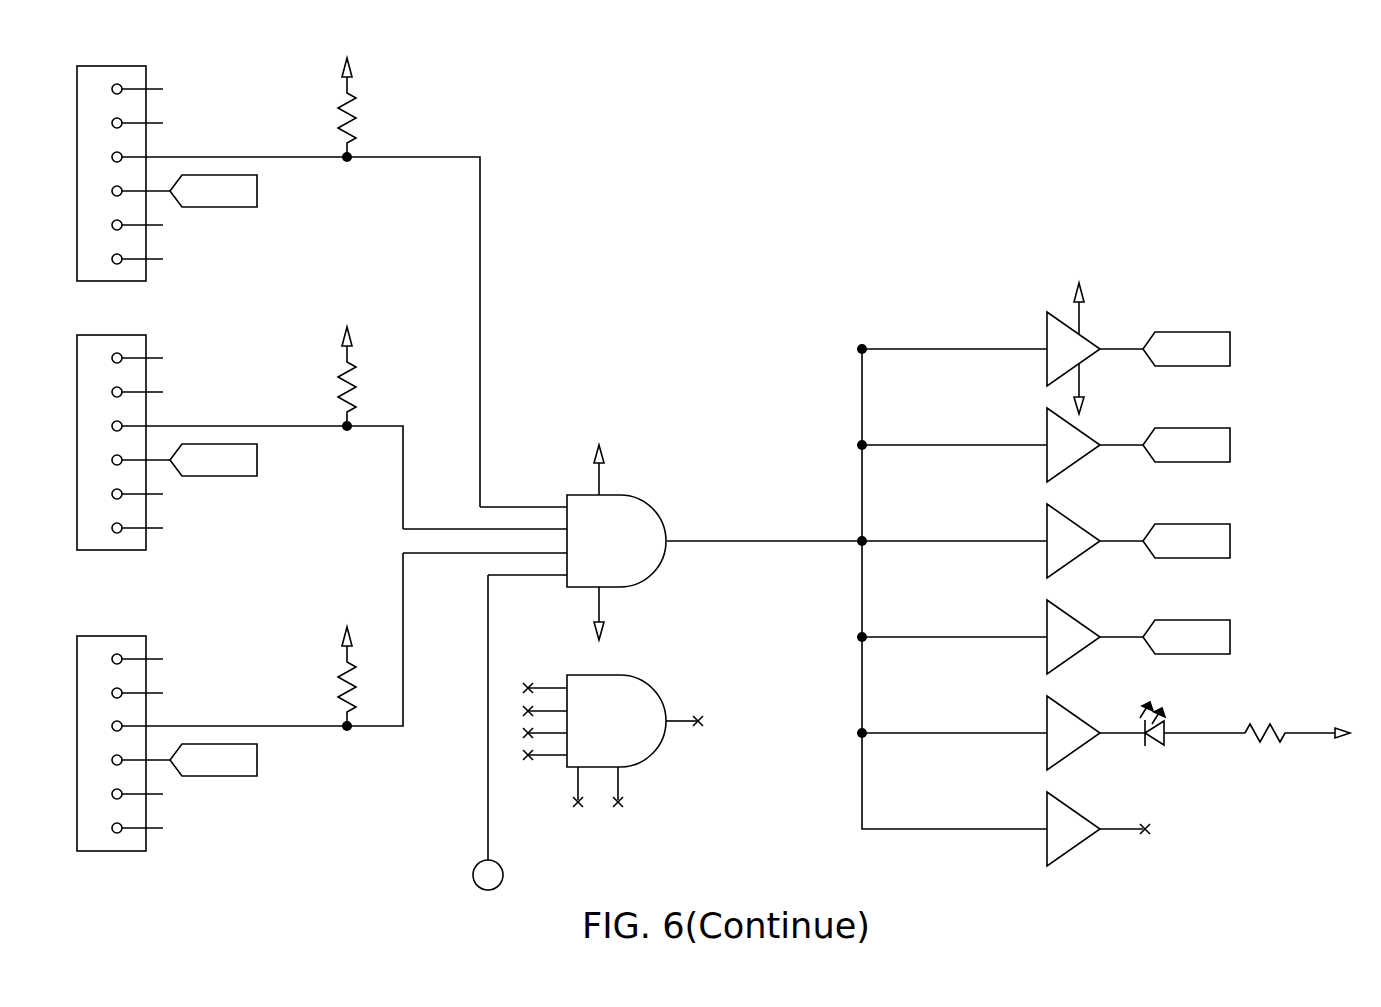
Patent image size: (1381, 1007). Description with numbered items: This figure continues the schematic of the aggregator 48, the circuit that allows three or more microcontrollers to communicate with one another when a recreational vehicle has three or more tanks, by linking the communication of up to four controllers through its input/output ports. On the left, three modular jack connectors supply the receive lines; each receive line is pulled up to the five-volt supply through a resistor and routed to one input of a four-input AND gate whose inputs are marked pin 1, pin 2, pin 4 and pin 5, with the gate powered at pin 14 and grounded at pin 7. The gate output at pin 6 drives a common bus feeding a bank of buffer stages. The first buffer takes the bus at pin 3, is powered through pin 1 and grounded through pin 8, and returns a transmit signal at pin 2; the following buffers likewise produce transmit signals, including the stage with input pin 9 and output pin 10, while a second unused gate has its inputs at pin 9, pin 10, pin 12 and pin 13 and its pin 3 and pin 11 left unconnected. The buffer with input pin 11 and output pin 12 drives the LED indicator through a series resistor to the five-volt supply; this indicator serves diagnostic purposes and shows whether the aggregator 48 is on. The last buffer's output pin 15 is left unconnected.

The aggregator 48 is at (1157, 198).
The U2 input pin 1 is at (523, 495).
The U2 input pin 2 is at (485, 517).
The CD4050 input pin 3 is at (954, 335).
The U2 input pin 4 is at (485, 541).
The U2 input pin 5 is at (527, 565).
The U2 output pin 6 is at (764, 526).
The U2 ground pin 7 is at (610, 613).
The CD4050 ground pin 8 is at (1086, 389).
The CD4050 input pin 9 is at (954, 623).
The CD4050 output pin 10 is at (1121, 623).
The CD4050 input pin 11 is at (954, 719).
The CD4050 output pin 12 is at (1122, 719).
The unused gate input pin 13 is at (545, 746).
The U2 power pin 14 is at (613, 470).
The CD4050 output pin 15 is at (1125, 817).